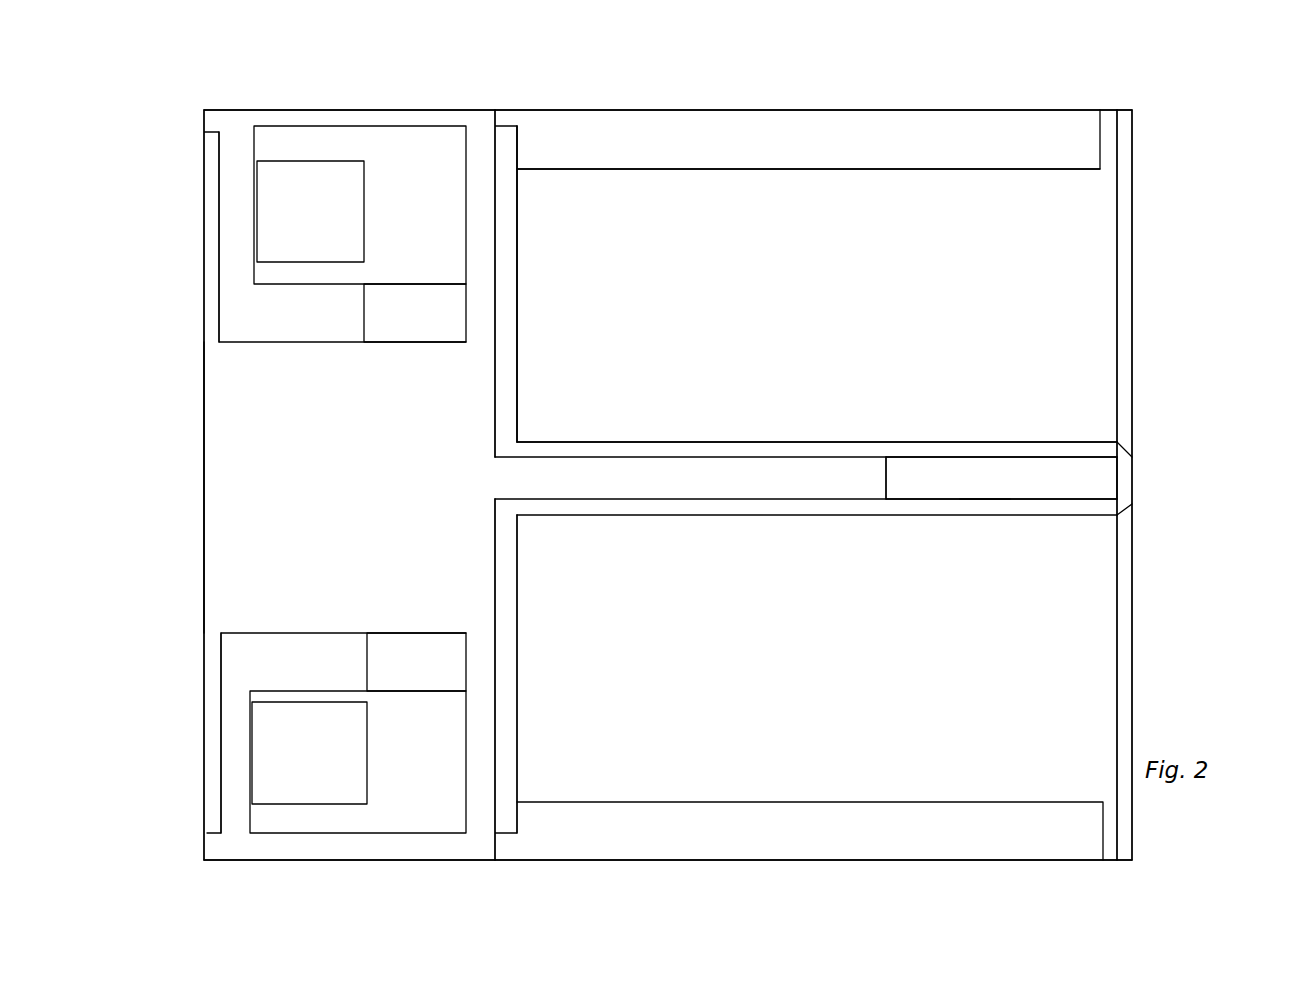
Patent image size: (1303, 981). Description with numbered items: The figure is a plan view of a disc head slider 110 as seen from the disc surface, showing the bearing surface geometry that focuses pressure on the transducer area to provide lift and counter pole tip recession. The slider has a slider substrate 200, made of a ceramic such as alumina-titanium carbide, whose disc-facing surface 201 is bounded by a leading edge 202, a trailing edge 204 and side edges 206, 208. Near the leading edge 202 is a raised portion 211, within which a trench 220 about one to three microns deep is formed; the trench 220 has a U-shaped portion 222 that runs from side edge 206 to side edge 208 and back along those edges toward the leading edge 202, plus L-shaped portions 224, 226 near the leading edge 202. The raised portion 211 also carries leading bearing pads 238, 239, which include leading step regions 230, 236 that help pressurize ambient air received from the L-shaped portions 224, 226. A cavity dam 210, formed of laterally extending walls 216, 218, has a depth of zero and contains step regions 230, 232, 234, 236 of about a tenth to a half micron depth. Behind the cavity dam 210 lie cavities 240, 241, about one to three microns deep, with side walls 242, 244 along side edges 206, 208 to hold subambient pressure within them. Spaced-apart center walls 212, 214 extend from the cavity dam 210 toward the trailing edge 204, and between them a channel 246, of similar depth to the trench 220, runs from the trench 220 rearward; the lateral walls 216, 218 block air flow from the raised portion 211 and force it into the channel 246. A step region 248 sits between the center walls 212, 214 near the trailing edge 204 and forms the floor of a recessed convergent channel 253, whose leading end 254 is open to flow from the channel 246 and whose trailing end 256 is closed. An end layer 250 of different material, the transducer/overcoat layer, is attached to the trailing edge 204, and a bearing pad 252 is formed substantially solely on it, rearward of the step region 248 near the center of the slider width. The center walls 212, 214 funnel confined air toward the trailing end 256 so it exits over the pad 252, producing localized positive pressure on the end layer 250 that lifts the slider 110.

The slider 110 is at (145, 125).
The slider substrate 200 is at (895, 208).
The disc-facing surface 201 is at (713, 203).
The leading edge 202 is at (204, 412).
The trailing edge 204 is at (1125, 420).
The side edge 206 is at (465, 110).
The side edge 208 is at (478, 860).
The cavity dam 210 is at (513, 602).
The raised portion 211 is at (238, 543).
The center wall 212 is at (605, 442).
The center wall 214 is at (618, 515).
The laterally extending wall 216 is at (505, 328).
The laterally extending wall 218 is at (505, 652).
The trench 220 is at (480, 717).
The U-shaped portion 222 is at (478, 293).
The L-shaped portion 224 is at (228, 225).
The L-shaped portion 226 is at (237, 745).
The step region 230 is at (329, 228).
The step region 232 is at (434, 327).
The step region 234 is at (434, 677).
The step region 236 is at (327, 772).
The leading bearing pad 238 is at (434, 228).
The leading bearing pad 239 is at (434, 772).
The cavity 240 is at (922, 308).
The cavity 241 is at (937, 643).
The side wall 242 is at (775, 135).
The side wall 244 is at (940, 843).
The channel 246 is at (722, 478).
The step region 248 is at (1023, 480).
The end layer 250 is at (1123, 227).
The bearing pad 252 is at (1133, 482).
The recessed convergent channel 253 is at (983, 502).
The leading end 254 is at (888, 480).
The trailing end 256 is at (1112, 477).